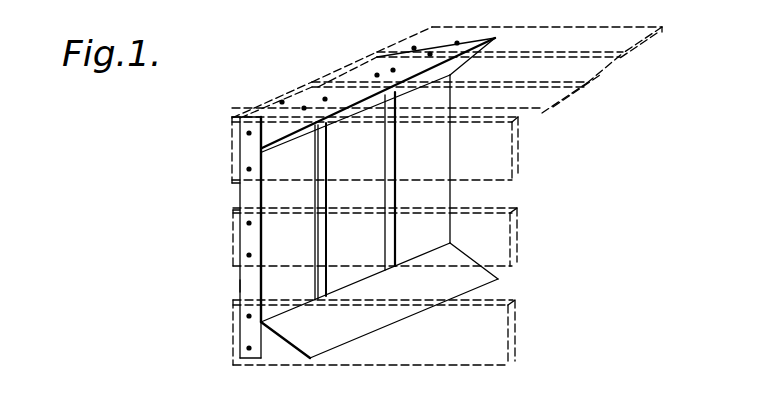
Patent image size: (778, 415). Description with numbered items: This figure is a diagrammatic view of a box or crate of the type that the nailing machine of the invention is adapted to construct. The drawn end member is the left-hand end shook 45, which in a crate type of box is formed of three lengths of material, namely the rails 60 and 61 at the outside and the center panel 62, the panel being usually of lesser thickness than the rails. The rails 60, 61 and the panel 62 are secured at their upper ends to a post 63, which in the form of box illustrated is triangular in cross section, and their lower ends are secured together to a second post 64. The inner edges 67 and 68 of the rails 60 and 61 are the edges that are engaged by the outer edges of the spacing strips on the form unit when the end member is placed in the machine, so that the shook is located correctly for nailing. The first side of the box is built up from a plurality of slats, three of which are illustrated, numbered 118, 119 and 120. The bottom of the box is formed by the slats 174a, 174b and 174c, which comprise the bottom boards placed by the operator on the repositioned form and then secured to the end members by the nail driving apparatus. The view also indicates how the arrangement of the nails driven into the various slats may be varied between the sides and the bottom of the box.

The left-hand end shook 45 is at (238, 285).
The rail 60 is at (451, 157).
The rail 61 is at (244, 187).
The panel 62 is at (396, 237).
The post 63 is at (288, 133).
The second post 64 is at (360, 331).
The inner edge of rail 67 is at (312, 158).
The inner edge of rail 68 is at (392, 142).
The slat 118 is at (645, 47).
The slat 119 is at (610, 83).
The slat 120 is at (563, 107).
The slat 174a is at (519, 332).
The slat 174b is at (518, 240).
The slat 174c is at (520, 162).